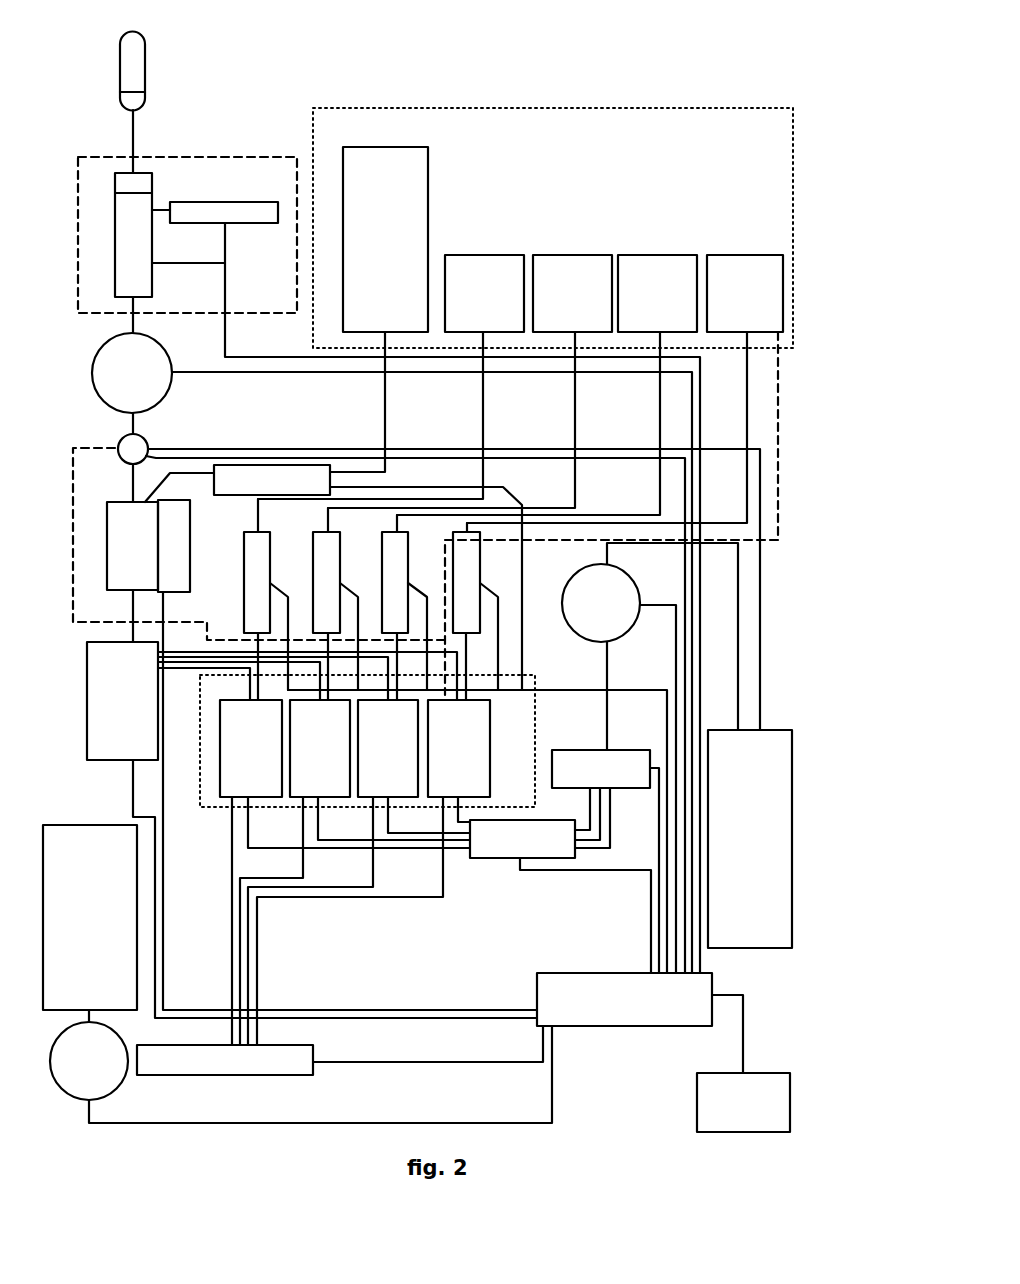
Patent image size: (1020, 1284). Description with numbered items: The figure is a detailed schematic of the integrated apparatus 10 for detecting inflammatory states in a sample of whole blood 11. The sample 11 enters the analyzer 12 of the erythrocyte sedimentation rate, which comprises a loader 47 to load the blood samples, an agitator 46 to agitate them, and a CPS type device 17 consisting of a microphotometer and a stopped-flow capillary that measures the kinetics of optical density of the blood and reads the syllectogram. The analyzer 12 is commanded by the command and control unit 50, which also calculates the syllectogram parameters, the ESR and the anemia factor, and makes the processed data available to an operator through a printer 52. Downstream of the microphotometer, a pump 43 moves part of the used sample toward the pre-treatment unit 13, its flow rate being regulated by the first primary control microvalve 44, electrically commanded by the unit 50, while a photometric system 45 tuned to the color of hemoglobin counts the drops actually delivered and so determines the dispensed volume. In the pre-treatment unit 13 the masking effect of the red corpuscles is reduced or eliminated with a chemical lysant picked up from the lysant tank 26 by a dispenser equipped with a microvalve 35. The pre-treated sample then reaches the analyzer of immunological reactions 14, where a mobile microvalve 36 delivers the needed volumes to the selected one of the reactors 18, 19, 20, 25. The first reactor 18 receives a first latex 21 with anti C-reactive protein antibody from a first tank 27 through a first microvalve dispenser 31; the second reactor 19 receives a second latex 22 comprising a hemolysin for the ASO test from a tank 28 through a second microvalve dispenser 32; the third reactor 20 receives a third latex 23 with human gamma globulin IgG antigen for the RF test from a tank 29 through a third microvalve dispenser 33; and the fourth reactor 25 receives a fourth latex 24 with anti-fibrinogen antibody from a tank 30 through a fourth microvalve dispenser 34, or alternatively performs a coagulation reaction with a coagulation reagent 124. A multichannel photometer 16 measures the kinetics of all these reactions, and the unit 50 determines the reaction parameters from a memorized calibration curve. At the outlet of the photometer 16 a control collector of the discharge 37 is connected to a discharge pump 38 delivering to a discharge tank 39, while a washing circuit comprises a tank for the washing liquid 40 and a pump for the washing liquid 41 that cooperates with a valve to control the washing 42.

The integrated apparatus 10 is at (513, 73).
The sample of whole blood 11 is at (136, 70).
The analyzer 12 is at (78, 305).
The pre-treatment unit 13 is at (118, 570).
The analyzer of immunological reactions 14 is at (218, 805).
The multichannel photometer 16 is at (500, 860).
The CPS type device 17 is at (140, 246).
The first reactor 18 is at (345, 872).
The second reactor 19 is at (355, 872).
The third reactor 20 is at (359, 872).
The first latex 21 is at (484, 415).
The second latex 22 is at (576, 436).
The third latex 23 is at (660, 400).
The fourth latex 24 is at (747, 405).
The fourth reactor 25 is at (373, 872).
The lysant tank 26 is at (420, 200).
The first tank 27 is at (485, 270).
The tank 28 is at (572, 270).
The tank 29 is at (660, 270).
The tank 30 is at (748, 270).
The first microvalve dispenser 31 is at (258, 568).
The second microvalve dispenser 32 is at (323, 572).
The third microvalve dispenser 33 is at (392, 572).
The fourth microvalve dispenser 34 is at (462, 572).
The microvalve 35 is at (368, 577).
The mobile microvalve 36 is at (100, 735).
The control collector of the discharge 37 is at (570, 760).
The discharge pump 38 is at (582, 585).
The discharge tank 39 is at (772, 948).
The tank for the washing liquid 40 is at (92, 845).
The pump for the washing liquid 41 is at (82, 1088).
The valve to control the washing 42 is at (229, 1070).
The pump 43 is at (118, 380).
The first primary control microvalve 44 is at (140, 445).
The photometric system 45 is at (182, 542).
The agitator 46 is at (242, 209).
The loader 47 is at (140, 184).
The command and control unit 50 is at (592, 975).
The printer 52 is at (697, 1103).
The coagulation reagent 124 is at (785, 545).